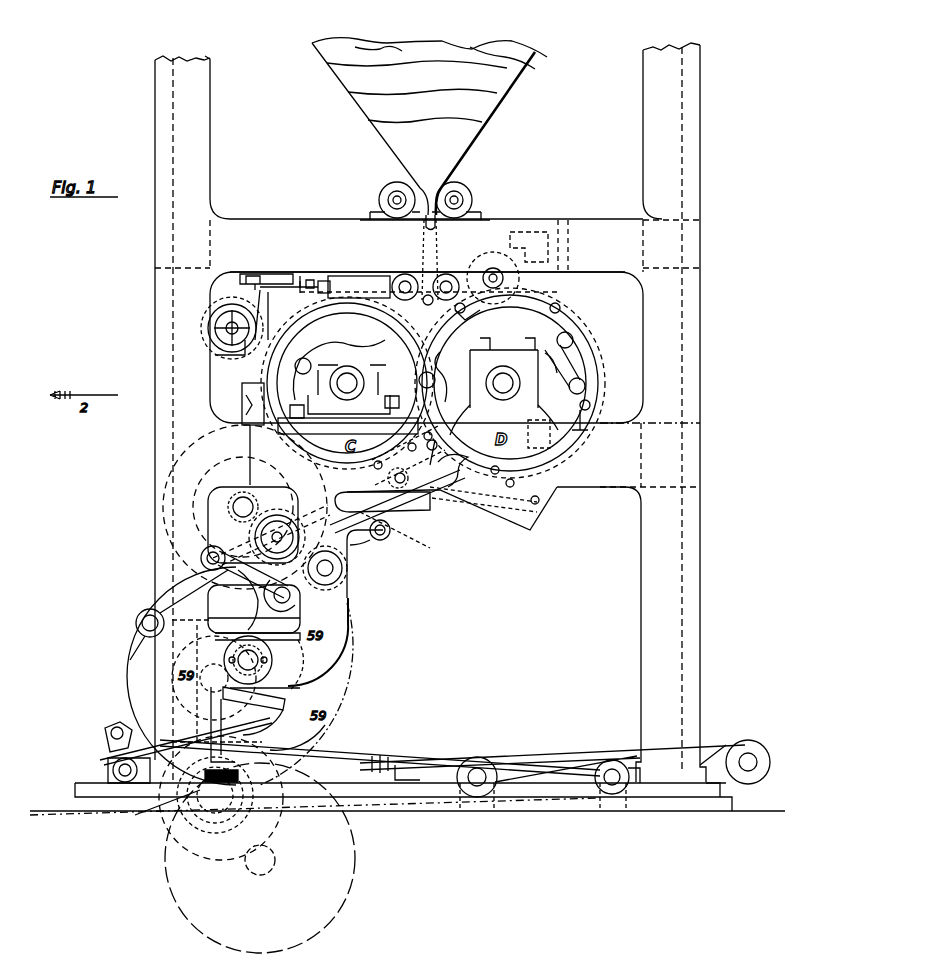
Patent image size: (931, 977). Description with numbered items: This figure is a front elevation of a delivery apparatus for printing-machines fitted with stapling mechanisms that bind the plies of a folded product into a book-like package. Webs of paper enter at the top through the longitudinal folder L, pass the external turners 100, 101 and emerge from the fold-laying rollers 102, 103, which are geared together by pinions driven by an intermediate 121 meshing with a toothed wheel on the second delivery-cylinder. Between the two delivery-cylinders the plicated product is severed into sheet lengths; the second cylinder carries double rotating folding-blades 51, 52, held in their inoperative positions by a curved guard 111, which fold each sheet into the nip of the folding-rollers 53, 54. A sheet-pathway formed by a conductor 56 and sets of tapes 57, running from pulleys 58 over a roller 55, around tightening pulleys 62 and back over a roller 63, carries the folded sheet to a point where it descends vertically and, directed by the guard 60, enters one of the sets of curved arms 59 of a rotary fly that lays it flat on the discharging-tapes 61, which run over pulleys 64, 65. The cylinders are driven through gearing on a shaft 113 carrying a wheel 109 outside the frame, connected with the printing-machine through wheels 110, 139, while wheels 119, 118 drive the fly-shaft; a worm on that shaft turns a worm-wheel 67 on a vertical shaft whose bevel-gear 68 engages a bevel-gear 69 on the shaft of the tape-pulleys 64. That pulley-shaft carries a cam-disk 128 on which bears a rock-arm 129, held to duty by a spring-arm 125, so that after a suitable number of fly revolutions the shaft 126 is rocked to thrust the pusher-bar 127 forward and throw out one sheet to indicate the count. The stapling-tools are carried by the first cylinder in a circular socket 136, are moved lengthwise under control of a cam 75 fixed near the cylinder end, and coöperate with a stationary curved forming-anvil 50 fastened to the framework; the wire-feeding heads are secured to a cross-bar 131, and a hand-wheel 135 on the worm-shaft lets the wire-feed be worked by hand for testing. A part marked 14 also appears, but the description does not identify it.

The external turner 100 is at (384, 185).
The external turner 101 is at (468, 188).
The fold-laying roller 102 is at (400, 272).
The fold-laying roller 103 is at (447, 272).
The intermediate 121 is at (486, 254).
The cross-bar 131 is at (277, 280).
The hand-wheel 135 is at (224, 324).
The forming-anvil 50 is at (325, 287).
The cam 75 is at (347, 383).
The roller 14 is at (421, 305).
The rotating folding-blade 51 is at (438, 373).
The rotating folding-blade 52 is at (546, 343).
The curved guard 111 is at (585, 334).
The circular socket 136 is at (271, 431).
The wheel 109 is at (163, 490).
The shaft 113 is at (243, 490).
The wheel 119 is at (285, 465).
The folding-roller 53 is at (408, 456).
The pulley 58 is at (382, 519).
The tapes 57 is at (395, 501).
The conductor 56 is at (387, 528).
The folding-roller 54 is at (484, 483).
The roller 63 is at (260, 528).
The roller 55 is at (344, 568).
The curved arms 59 is at (265, 600).
The tightening pulley 62 is at (292, 595).
The wheel 110 is at (135, 655).
The worm-wheel 67 is at (236, 660).
The wheel 118 is at (352, 660).
The guard 60 is at (295, 688).
The pusher-bar 127 is at (248, 724).
The rock-arm 129 is at (140, 730).
The shaft 126 is at (112, 770).
The spring-arm 125 is at (330, 760).
The discharging-tapes 61 is at (527, 750).
The pulley 65 is at (760, 755).
The bevel-gear 68 is at (203, 774).
The bevel-gear 69 is at (157, 807).
The tape-pulley 64 is at (215, 798).
The cam-disk 128 is at (160, 828).
The wheel 139 is at (355, 862).
The longitudinal folder L is at (487, 110).